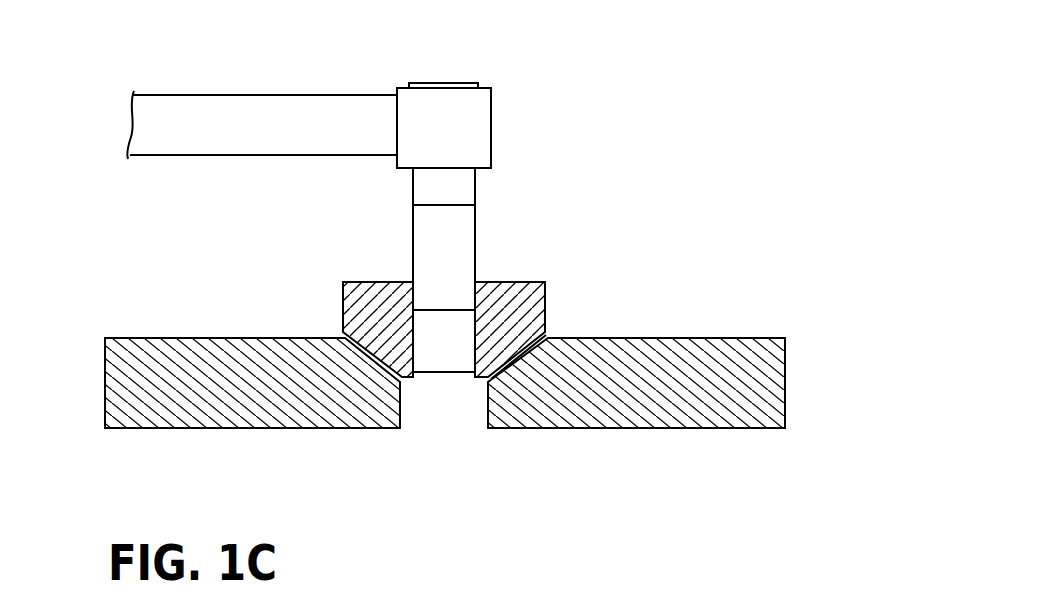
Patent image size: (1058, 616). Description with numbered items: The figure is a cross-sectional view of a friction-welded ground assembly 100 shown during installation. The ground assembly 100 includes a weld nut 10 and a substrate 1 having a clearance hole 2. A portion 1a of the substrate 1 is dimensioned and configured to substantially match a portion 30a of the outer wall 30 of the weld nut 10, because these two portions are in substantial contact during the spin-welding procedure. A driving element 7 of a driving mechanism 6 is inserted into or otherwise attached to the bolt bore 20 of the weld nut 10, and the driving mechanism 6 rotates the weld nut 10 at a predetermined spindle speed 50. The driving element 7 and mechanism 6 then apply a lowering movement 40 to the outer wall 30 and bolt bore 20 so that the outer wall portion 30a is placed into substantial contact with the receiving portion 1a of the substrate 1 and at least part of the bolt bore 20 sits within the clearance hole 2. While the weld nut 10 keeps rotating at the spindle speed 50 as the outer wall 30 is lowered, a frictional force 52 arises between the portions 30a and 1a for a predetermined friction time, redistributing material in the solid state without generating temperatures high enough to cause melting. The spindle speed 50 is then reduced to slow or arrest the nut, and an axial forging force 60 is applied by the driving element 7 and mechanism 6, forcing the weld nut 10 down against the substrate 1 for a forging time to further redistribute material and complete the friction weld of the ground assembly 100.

The substrate 1 is at (758, 360).
The portion of the substrate 1a is at (531, 362).
The clearance hole 2 is at (455, 418).
The driving mechanism 6 is at (444, 102).
The driving element 7 is at (442, 236).
The weld nut 10 is at (565, 243).
The bolt bore 20 is at (435, 380).
The outer wall 30 is at (520, 280).
The portion of the outer wall 30a is at (552, 340).
The lowering movement 40 is at (509, 137).
The spindle speed 50 is at (307, 265).
The frictional force 52 is at (343, 336).
The axial forging force 60 is at (328, 265).
The friction-welded ground assembly 100 is at (770, 164).